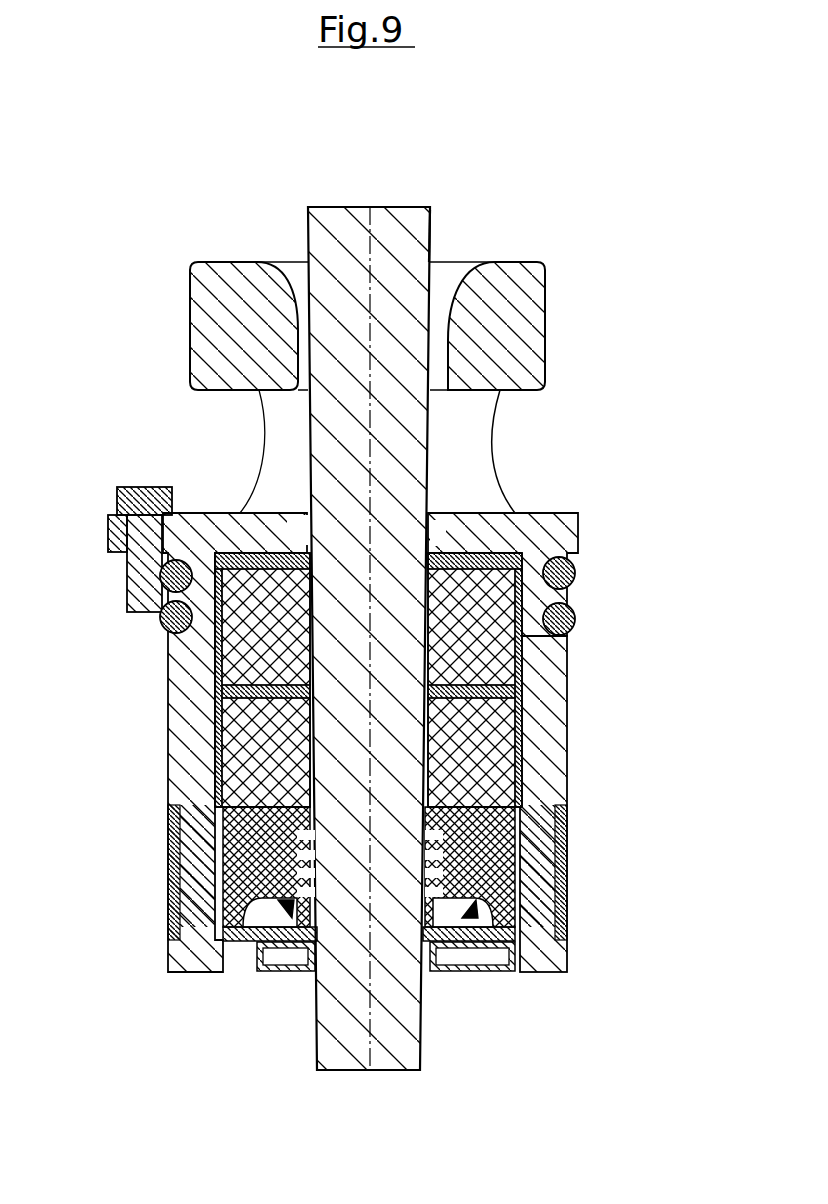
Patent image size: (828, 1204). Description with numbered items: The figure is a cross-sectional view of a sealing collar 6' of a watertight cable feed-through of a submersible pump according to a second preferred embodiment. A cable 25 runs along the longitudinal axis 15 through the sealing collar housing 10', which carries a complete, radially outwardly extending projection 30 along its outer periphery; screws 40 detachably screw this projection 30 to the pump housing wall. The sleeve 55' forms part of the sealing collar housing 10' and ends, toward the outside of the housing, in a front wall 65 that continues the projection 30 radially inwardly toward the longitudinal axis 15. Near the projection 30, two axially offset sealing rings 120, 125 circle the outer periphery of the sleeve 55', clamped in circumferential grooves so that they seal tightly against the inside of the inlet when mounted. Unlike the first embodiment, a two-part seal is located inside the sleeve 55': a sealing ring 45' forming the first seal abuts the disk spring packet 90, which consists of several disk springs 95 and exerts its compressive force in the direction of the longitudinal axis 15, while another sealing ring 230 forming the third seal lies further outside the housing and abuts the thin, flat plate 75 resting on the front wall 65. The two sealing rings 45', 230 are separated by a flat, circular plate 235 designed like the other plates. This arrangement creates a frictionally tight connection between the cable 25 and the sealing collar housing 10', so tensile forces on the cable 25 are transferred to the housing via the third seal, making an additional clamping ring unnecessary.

The sealing collar 6' is at (473, 573).
The longitudinal axis 15 is at (372, 207).
The cable 25 is at (440, 245).
The sealing collar housing 10' is at (413, 387).
The front wall 65 is at (514, 515).
The plate 75 is at (560, 518).
The screws 40 is at (165, 487).
The projection 30 is at (108, 540).
The sealing ring 120 is at (575, 580).
The sealing ring 125 is at (577, 630).
The flat circular plate 235 is at (225, 735).
The sealing ring 230 is at (520, 678).
The sleeve 55' is at (196, 742).
The sealing ring 45' is at (595, 804).
The disk springs 95 is at (248, 912).
The disk spring packet 90 is at (470, 913).